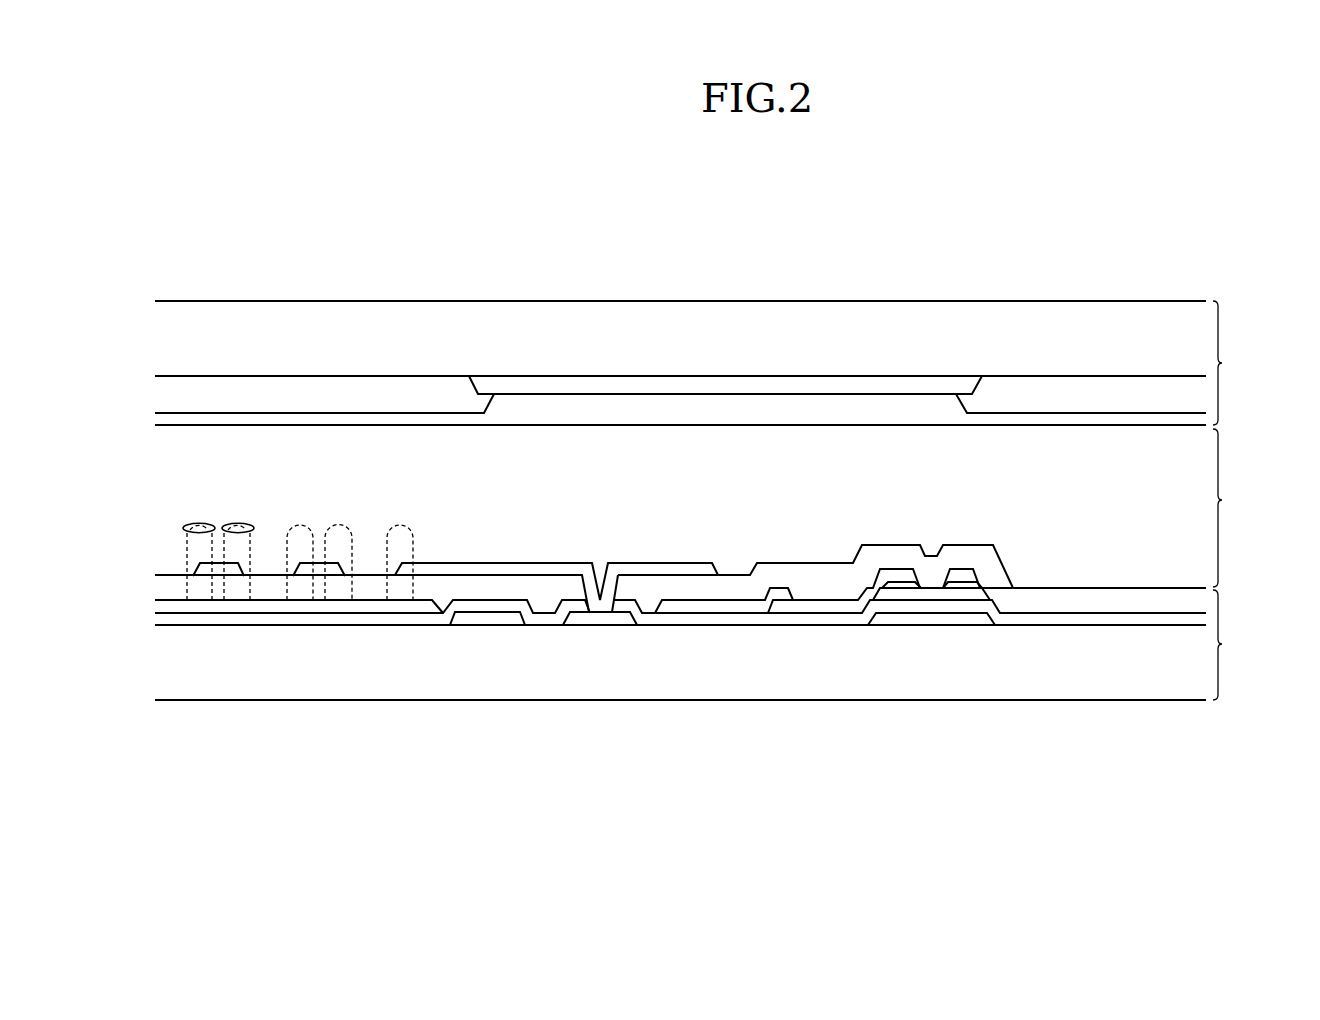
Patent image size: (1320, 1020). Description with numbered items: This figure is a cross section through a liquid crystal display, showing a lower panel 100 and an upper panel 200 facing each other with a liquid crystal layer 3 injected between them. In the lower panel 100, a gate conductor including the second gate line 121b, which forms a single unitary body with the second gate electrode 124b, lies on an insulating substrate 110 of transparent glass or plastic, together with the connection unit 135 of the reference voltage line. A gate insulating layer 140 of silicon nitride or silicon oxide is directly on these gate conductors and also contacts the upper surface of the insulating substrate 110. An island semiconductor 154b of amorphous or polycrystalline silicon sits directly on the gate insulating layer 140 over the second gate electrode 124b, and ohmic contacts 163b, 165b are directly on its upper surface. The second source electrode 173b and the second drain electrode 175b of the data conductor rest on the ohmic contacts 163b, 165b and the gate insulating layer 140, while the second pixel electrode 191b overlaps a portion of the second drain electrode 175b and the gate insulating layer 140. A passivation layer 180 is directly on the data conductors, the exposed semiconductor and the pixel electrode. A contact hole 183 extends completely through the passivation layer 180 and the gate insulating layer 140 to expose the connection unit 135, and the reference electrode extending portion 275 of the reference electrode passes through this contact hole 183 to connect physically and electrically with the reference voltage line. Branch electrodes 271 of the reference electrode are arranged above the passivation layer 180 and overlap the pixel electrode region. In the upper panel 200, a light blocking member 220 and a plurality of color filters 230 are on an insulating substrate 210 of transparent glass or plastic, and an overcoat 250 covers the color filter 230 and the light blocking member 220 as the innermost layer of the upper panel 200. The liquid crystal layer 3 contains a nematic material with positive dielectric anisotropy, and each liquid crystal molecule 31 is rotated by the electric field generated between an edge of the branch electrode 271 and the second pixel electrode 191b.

The upper panel 200 is at (1241, 363).
The insulating substrate 210 is at (1080, 330).
The light blocking member 220 is at (750, 388).
The color filter 230 is at (360, 390).
The overcoat 250 is at (905, 405).
The liquid crystal layer 3 is at (1229, 508).
The lower panel 100 is at (1241, 645).
The insulating substrate 110 is at (1012, 677).
The second gate line 121b is at (487, 620).
The second gate electrode 124b is at (950, 620).
The connection unit 135 is at (600, 618).
The gate insulating layer 140 is at (744, 618).
The island semiconductor 154b is at (903, 590).
The ohmic contact 163b is at (955, 588).
The ohmic contact 165b is at (893, 588).
The second source electrode 173b is at (960, 585).
The second drain electrode 175b is at (812, 603).
The passivation layer 180 is at (1117, 603).
The contact hole 183 is at (600, 592).
The second pixel electrode 191b is at (690, 605).
The branch electrode 271 is at (217, 568).
The reference electrode extending portion 275 is at (543, 570).
The liquid crystal molecule 31 is at (190, 524).